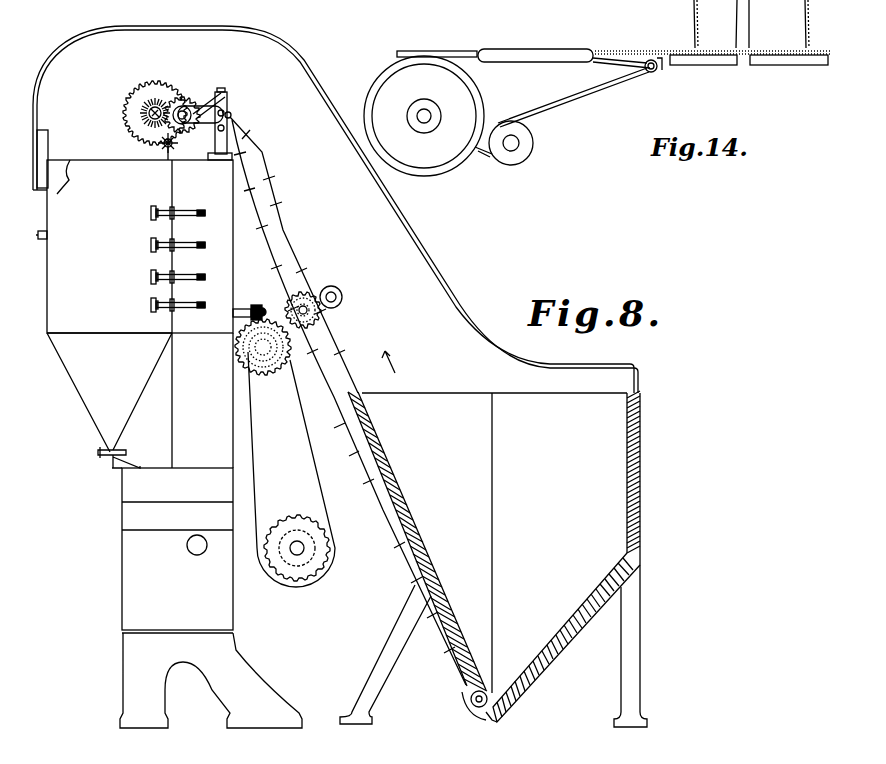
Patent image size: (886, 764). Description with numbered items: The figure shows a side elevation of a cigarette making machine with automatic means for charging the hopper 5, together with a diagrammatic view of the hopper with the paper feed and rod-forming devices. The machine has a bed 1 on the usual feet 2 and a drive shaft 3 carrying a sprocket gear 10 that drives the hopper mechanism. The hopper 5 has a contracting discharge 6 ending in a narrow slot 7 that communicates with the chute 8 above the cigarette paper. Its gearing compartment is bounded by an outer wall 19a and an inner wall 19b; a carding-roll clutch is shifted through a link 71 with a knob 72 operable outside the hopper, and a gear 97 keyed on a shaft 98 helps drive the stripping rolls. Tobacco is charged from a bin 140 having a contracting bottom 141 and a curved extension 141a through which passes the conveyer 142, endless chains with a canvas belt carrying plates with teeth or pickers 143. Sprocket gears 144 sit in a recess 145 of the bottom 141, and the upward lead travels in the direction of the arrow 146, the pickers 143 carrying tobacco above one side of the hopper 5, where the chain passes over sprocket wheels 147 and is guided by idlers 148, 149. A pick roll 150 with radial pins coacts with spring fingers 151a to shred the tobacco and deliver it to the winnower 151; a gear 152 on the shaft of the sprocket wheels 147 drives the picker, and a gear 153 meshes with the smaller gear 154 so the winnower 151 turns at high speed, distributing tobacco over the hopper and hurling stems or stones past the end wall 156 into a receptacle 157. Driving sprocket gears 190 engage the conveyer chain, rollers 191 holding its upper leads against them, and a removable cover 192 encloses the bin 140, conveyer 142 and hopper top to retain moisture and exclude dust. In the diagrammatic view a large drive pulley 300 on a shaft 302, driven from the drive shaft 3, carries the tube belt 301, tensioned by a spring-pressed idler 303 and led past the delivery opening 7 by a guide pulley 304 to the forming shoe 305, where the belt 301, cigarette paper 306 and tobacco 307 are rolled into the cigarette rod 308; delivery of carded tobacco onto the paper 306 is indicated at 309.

In FIG. 8, the bed 1 is at (128, 572).
In FIG. 8, the feet 2 is at (124, 681).
In FIG. 8, the drive shaft 3 is at (293, 553).
In FIG. 8, the hopper 5 is at (67, 328).
In FIG. 8, the contracting discharge 6 is at (68, 372).
In FIG. 8, the slot 7 is at (127, 440).
In FIG. 14, the slot 7 is at (712, 25).
In FIG. 8, the chute 8 is at (105, 461).
In FIG. 8, the sprocket gear 10 is at (305, 584).
In FIG. 8, the outer wall 19a is at (234, 280).
In FIG. 8, the inner wall 19b is at (172, 319).
In FIG. 8, the link 71 is at (187, 213).
In FIG. 8, the knob 72 is at (152, 276).
In FIG. 8, the gear 97 is at (305, 352).
In FIG. 8, the shaft 98 is at (262, 310).
In FIG. 8, the bin 140 is at (600, 487).
In FIG. 8, the contracting bottom 141 is at (528, 655).
In FIG. 8, the curved extension 141a is at (472, 716).
In FIG. 8, the conveyer 142 is at (276, 188).
In FIG. 8, the teeth or prongs 143 is at (316, 266).
In FIG. 8, the sprocket gears 144 is at (489, 716).
In FIG. 8, the recess 145 is at (472, 699).
In FIG. 8, the arrow 146 is at (390, 362).
In FIG. 8, the sprocket wheels 147 is at (213, 103).
In FIG. 8, the sprocket gear or idler 148 is at (229, 101).
In FIG. 8, the sprocket gear or idler 149 is at (232, 116).
In FIG. 8, the pick roll 150 is at (148, 108).
In FIG. 8, the winnower 151 is at (177, 143).
In FIG. 8, the spring fingers 151a is at (224, 92).
In FIG. 8, the gear 152 is at (183, 97).
In FIG. 8, the gear 153 is at (152, 87).
In FIG. 8, the smaller gear 154 is at (163, 150).
In FIG. 8, the end wall 156 is at (72, 187).
In FIG. 8, the receptacle 157 is at (40, 142).
In FIG. 8, the sprocket gears 190 is at (344, 296).
In FIG. 8, the rollers 191 is at (344, 301).
In FIG. 8, the removable cover 192 is at (446, 273).
In FIG. 14, the drive pulley 300 is at (437, 177).
In FIG. 14, the tube belt 301 is at (581, 108).
In FIG. 14, the shaft 302 is at (427, 125).
In FIG. 14, the spring-pressed idler 303 is at (521, 160).
In FIG. 14, the guide pulley 304 is at (650, 73).
In FIG. 14, the forming shoe 305 is at (544, 63).
In FIG. 14, the cigarette paper 306 is at (668, 68).
In FIG. 14, the cigarette tobacco 307 is at (669, 52).
In FIG. 14, the cigarette rod 308 is at (443, 52).
In FIG. 14, the delivery of carded tobacco 309 is at (723, 66).